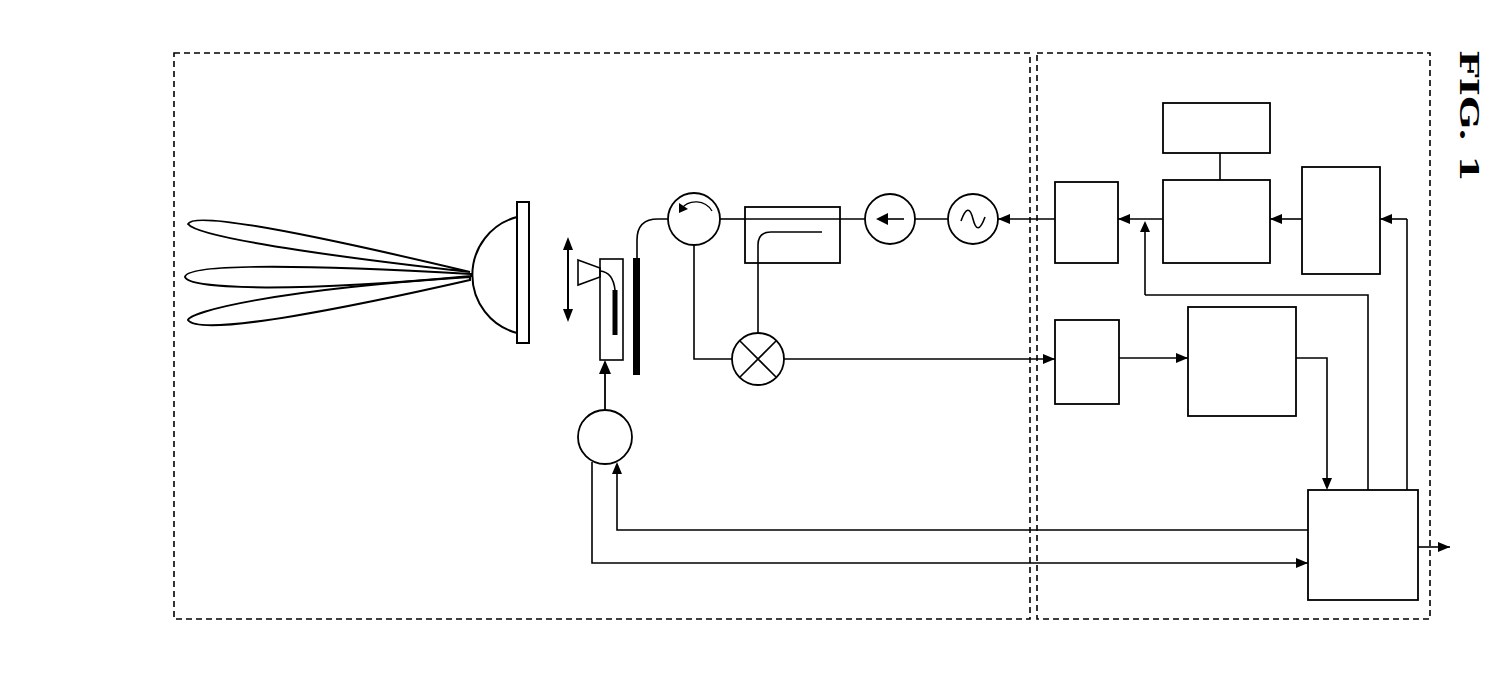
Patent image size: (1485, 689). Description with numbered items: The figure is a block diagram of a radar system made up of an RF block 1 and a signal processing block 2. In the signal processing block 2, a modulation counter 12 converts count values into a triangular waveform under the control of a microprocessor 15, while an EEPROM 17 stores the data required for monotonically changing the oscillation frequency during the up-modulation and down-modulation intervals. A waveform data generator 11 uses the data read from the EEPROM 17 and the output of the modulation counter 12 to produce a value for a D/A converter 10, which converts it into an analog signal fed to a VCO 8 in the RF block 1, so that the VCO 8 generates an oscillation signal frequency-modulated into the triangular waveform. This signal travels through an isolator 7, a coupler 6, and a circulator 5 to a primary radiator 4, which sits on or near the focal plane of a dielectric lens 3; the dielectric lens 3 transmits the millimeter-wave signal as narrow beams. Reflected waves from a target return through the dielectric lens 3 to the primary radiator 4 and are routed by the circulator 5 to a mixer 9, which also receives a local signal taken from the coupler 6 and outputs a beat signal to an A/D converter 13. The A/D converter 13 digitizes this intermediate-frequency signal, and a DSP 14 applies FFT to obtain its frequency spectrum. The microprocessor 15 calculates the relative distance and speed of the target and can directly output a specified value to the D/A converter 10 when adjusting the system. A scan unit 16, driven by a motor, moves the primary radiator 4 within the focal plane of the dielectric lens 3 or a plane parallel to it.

The RF block 1 is at (777, 46).
The signal processing block 2 is at (1241, 46).
The dielectric lens 3 is at (488, 217).
The primary radiator 4 is at (610, 245).
The circulator 5 is at (705, 197).
The coupler 6 is at (815, 207).
The isolator 7 is at (893, 195).
The VCO 8 is at (975, 195).
The mixer 9 is at (782, 375).
The D/A converter 10 is at (1108, 180).
The waveform data generator 11 is at (1270, 180).
The modulation counter 12 is at (1352, 167).
The A/D converter 13 is at (1081, 404).
The DSP 14 is at (1197, 416).
The microprocessor 15 is at (1418, 490).
The scan unit 16 is at (560, 442).
The EEPROM 17 is at (1272, 103).